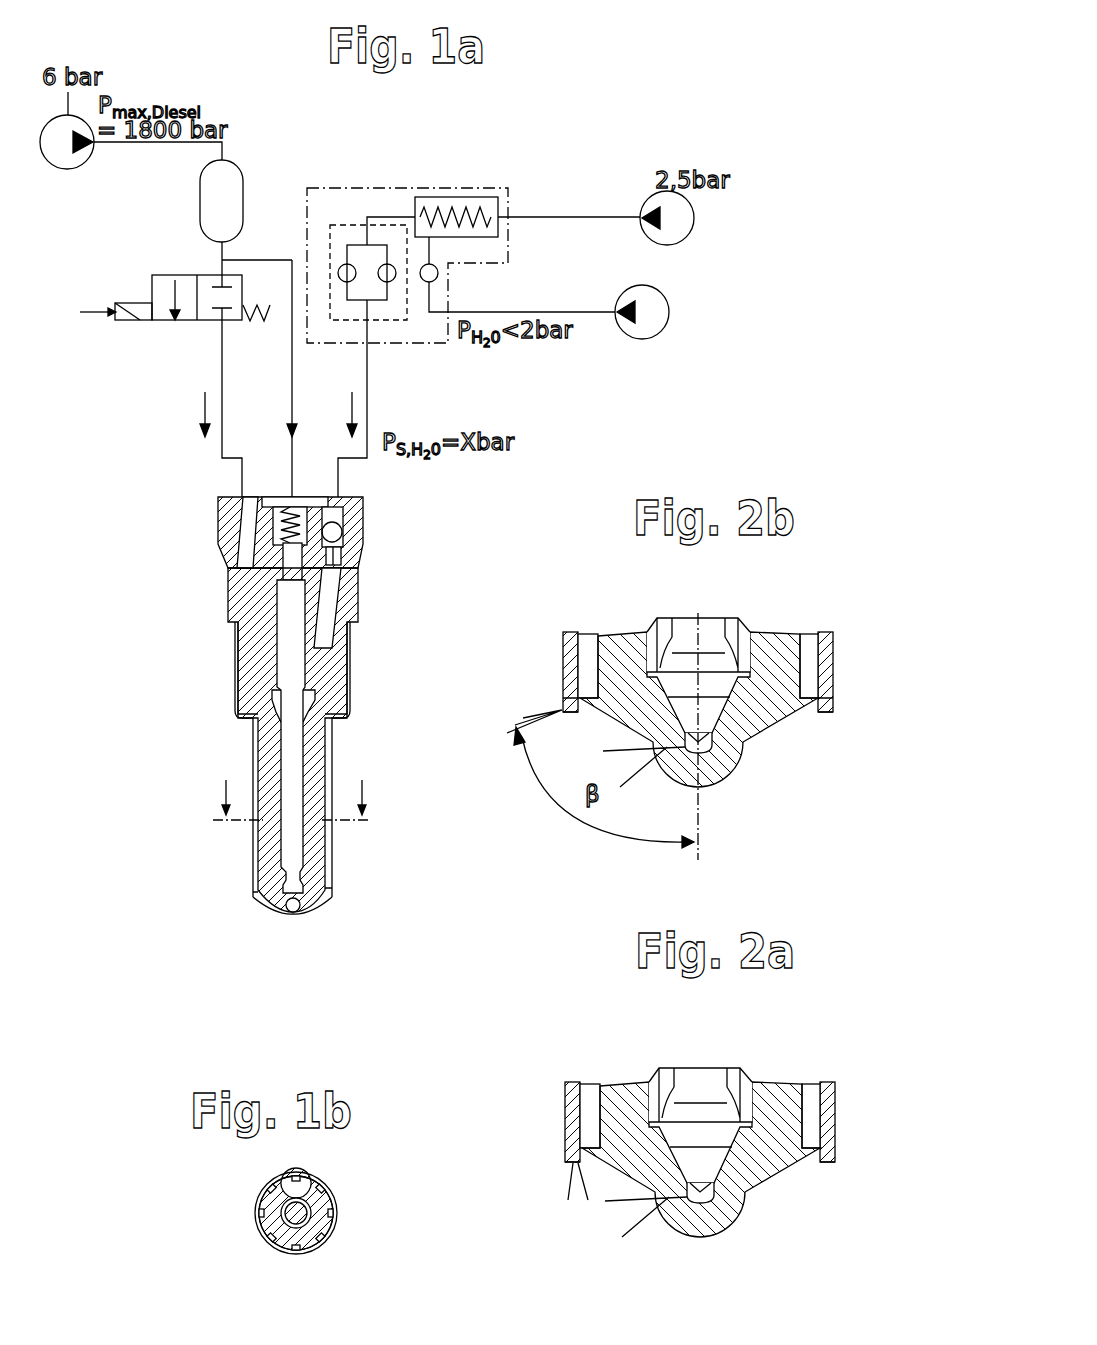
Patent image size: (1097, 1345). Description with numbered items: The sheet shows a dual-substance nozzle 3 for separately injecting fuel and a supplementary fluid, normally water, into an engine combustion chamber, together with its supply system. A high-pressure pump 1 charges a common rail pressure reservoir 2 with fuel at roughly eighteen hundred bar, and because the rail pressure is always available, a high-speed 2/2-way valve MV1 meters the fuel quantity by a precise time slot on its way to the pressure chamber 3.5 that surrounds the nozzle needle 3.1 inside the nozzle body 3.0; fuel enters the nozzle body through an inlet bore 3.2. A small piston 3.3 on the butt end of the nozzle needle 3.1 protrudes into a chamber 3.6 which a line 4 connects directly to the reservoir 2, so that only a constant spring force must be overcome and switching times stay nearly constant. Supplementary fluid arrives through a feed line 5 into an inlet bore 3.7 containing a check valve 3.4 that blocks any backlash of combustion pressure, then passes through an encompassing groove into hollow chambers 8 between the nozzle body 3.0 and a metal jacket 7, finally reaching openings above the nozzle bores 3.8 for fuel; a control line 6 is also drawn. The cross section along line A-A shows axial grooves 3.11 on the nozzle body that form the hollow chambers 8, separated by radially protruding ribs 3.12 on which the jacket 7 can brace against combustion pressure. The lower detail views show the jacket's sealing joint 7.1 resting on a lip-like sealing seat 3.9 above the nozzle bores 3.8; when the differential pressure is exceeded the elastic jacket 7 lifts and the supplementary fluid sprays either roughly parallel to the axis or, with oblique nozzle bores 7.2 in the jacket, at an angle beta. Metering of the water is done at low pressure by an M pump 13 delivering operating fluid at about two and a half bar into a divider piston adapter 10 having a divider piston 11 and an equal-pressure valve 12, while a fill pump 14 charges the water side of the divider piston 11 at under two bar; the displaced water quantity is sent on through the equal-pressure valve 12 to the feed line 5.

In FIG. 1A, the high-pressure pump 1 is at (62, 165).
In FIG. 1A, the common rail pressure reservoir 2 is at (233, 178).
In FIG. 1A, the dual-substance nozzle 3 is at (287, 726).
In FIG. 1A, the nozzle body 3.0 is at (237, 595).
In FIG. 2B, the nozzle body 3.0 is at (768, 635).
In FIG. 2A, the nozzle body 3.0 is at (701, 1132).
In FIG. 1A, the nozzle needle 3.1 is at (288, 622).
In FIG. 2B, the nozzle needle 3.1 is at (703, 635).
In FIG. 2A, the nozzle needle 3.1 is at (700, 1100).
In FIG. 1A, the inlet bore 3.2 is at (250, 555).
In FIG. 1A, the small piston 3.3 is at (287, 557).
In FIG. 1A, the check valve 3.4 is at (341, 530).
In FIG. 1A, the pressure chamber 3.5 is at (255, 727).
In FIG. 1A, the chamber 3.6 is at (283, 520).
In FIG. 1A, the inlet bore 3.7 is at (333, 507).
In FIG. 2B, the nozzle bores 3.8 is at (747, 767).
In FIG. 2A, the nozzle bores 3.8 is at (751, 1233).
In FIG. 2B, the sealing seat 3.9 is at (600, 698).
In FIG. 2A, the sealing seat 3.9 is at (712, 1196).
In FIG. 1B, the grooves 3.11 is at (335, 1213).
In FIG. 1B, the ribs 3.12 is at (313, 1243).
In FIG. 1A, the line 4 is at (292, 378).
In FIG. 1A, the feed line 5 is at (368, 405).
In FIG. 1A, the control line 6 is at (222, 376).
In FIG. 1A, the jacket 7 is at (350, 670).
In FIG. 1B, the jacket 7 is at (323, 1183).
In FIG. 2B, the jacket 7 is at (835, 653).
In FIG. 2A, the jacket 7 is at (726, 1121).
In FIG. 1A, the sealing joint 7.1 is at (253, 892).
In FIG. 2B, the sealing joint 7.1 is at (833, 693).
In FIG. 2A, the sealing joint 7.1 is at (733, 1143).
In FIG. 2B, the nozzle bores 7.2 is at (562, 707).
In FIG. 1A, the hollow chamber 8 is at (333, 723).
In FIG. 2B, the hollow chamber 8 is at (810, 645).
In FIG. 2A, the hollow chamber 8 is at (716, 1089).
In FIG. 1A, the divider piston adapter 10 is at (450, 347).
In FIG. 1A, the divider piston 11 is at (447, 197).
In FIG. 1A, the equal-pressure valve 12 is at (358, 244).
In FIG. 1A, the M pump 13 is at (653, 197).
In FIG. 1A, the fill pump 14 is at (652, 336).
In FIG. 1A, the 2/2-way valve MV1 is at (203, 275).